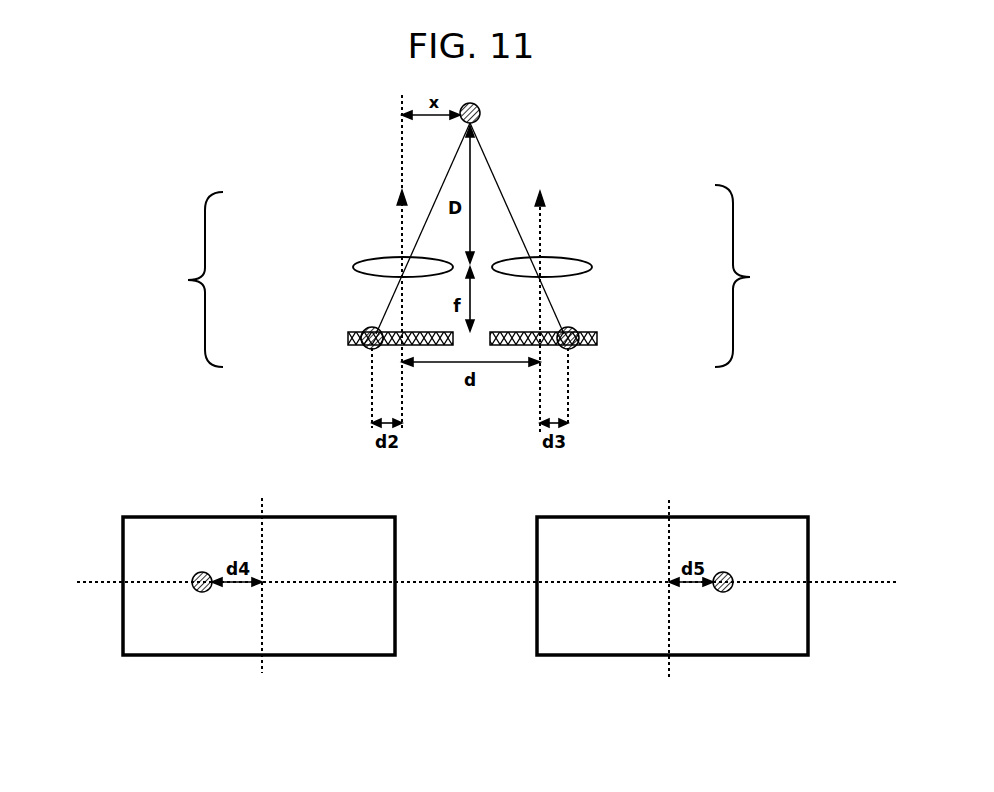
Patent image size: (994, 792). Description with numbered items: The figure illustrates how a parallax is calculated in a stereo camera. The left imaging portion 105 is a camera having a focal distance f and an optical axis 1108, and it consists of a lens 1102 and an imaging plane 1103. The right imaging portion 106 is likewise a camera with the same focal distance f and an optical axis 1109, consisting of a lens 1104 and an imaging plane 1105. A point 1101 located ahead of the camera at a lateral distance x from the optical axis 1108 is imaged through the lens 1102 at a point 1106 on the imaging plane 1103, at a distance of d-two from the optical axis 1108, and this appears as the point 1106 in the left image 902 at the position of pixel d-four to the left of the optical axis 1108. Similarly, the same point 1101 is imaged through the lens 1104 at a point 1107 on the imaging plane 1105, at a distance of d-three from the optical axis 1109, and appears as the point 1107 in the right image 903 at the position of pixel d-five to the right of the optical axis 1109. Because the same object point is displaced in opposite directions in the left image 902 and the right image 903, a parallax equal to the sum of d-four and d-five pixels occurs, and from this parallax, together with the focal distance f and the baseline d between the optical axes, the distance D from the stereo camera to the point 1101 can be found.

The point 1101 is at (481, 110).
The lens 1102 is at (353, 267).
The imaging plane 1103 is at (348, 339).
The lens 1104 is at (592, 267).
The imaging plane 1105 is at (597, 338).
The point 1106 is at (365, 348).
The point 1107 is at (575, 348).
The optical axis 1108 is at (399, 215).
The optical axis 1109 is at (541, 214).
The left imaging portion 105 is at (146, 279).
The right imaging portion 106 is at (799, 276).
The left image 902 is at (123, 633).
The right image 903 is at (808, 637).